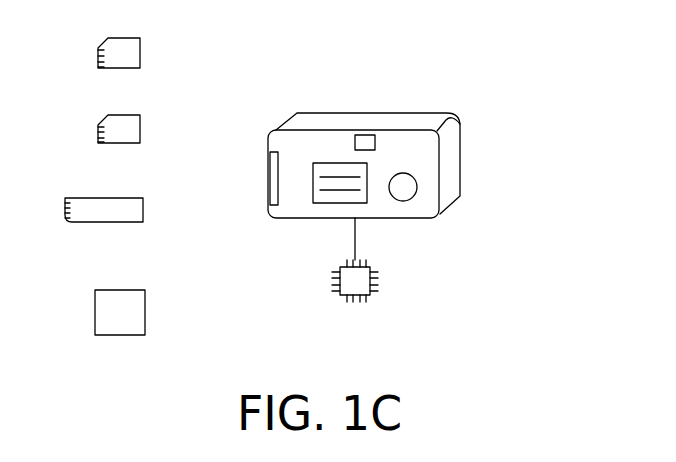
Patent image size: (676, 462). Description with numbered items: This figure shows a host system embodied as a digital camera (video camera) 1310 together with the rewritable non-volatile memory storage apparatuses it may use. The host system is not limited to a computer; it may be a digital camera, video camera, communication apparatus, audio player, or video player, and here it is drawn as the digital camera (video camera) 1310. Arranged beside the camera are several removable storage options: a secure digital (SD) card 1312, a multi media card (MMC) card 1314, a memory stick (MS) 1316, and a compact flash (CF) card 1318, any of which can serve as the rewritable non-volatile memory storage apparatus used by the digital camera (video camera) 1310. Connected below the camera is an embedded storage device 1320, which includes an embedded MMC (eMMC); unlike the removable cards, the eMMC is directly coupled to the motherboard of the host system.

The digital camera (video camera) 1310 is at (460, 150).
The secure digital (SD) card 1312 is at (140, 43).
The multi media card (MMC) card 1314 is at (140, 120).
The memory stick (MS) 1316 is at (143, 210).
The compact flash (CF) card 1318 is at (145, 305).
The embedded storage device 1320 is at (378, 284).